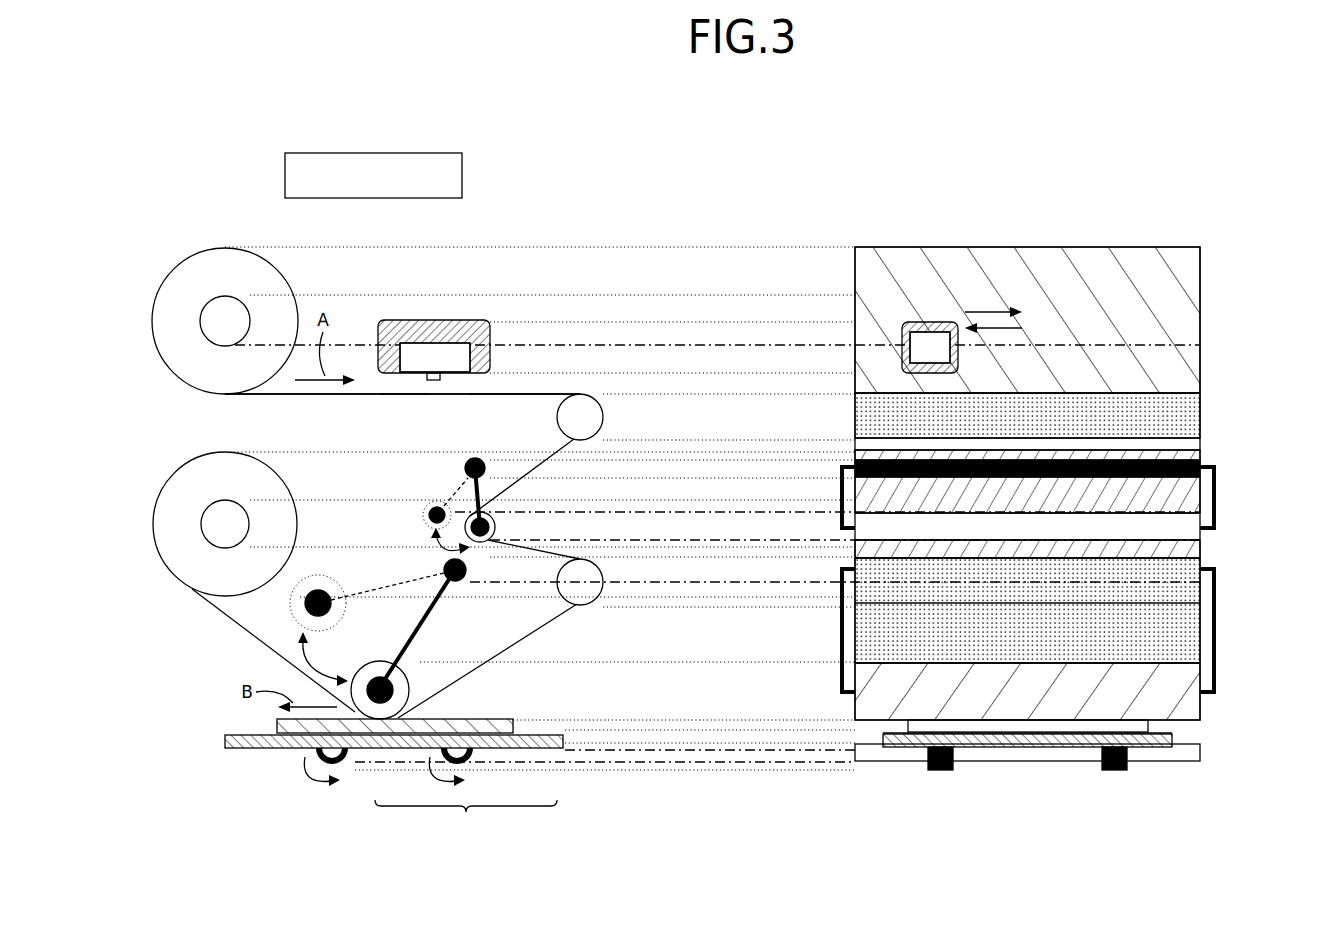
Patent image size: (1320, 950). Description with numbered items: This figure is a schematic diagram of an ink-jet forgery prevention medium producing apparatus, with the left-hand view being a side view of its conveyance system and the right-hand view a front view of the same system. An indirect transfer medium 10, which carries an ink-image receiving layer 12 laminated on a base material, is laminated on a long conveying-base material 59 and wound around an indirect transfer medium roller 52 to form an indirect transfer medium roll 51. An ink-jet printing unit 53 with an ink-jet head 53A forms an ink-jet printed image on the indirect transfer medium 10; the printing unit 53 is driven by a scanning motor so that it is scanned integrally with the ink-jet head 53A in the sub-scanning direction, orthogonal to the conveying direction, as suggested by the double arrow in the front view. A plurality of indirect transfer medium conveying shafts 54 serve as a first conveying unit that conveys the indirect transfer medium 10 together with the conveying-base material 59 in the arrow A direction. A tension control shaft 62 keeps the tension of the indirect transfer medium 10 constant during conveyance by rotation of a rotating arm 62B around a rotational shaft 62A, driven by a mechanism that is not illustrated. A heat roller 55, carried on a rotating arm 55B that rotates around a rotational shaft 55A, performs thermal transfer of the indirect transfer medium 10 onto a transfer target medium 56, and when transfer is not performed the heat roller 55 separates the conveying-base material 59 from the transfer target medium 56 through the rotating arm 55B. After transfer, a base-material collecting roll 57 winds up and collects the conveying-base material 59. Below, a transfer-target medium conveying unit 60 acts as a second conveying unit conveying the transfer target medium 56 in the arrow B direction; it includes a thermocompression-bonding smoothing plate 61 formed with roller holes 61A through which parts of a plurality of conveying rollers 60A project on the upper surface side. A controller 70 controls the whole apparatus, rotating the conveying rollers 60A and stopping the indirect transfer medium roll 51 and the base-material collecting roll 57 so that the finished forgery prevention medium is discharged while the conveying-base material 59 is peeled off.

The indirect transfer medium 10 is at (550, 393).
The ink-image receiving layer 12 is at (515, 393).
The indirect transfer medium roll 51 is at (245, 250).
The indirect transfer medium roller 52 is at (218, 303).
The ink-jet printing unit 53 is at (475, 320).
The ink-jet head 53A is at (417, 320).
The indirect transfer medium conveying shafts 54 is at (604, 417).
The heat roller 55 is at (322, 572).
The rotational shaft 55A is at (466, 580).
The rotating arm 55B is at (430, 627).
The transfer target medium 56 is at (497, 719).
The base-material collecting roll 57 is at (205, 452).
The conveying-base material 59 is at (396, 396).
The transfer-target medium conveying unit 60 is at (466, 819).
The conveying rollers 60A is at (355, 758).
The thermocompression-bonding smoothing plate 61 is at (258, 750).
The roller holes 61A is at (955, 735).
The tension control shaft 62 is at (496, 527).
The rotational shaft 62A is at (470, 460).
The rotating arm 62B is at (445, 505).
The controller 70 is at (437, 152).